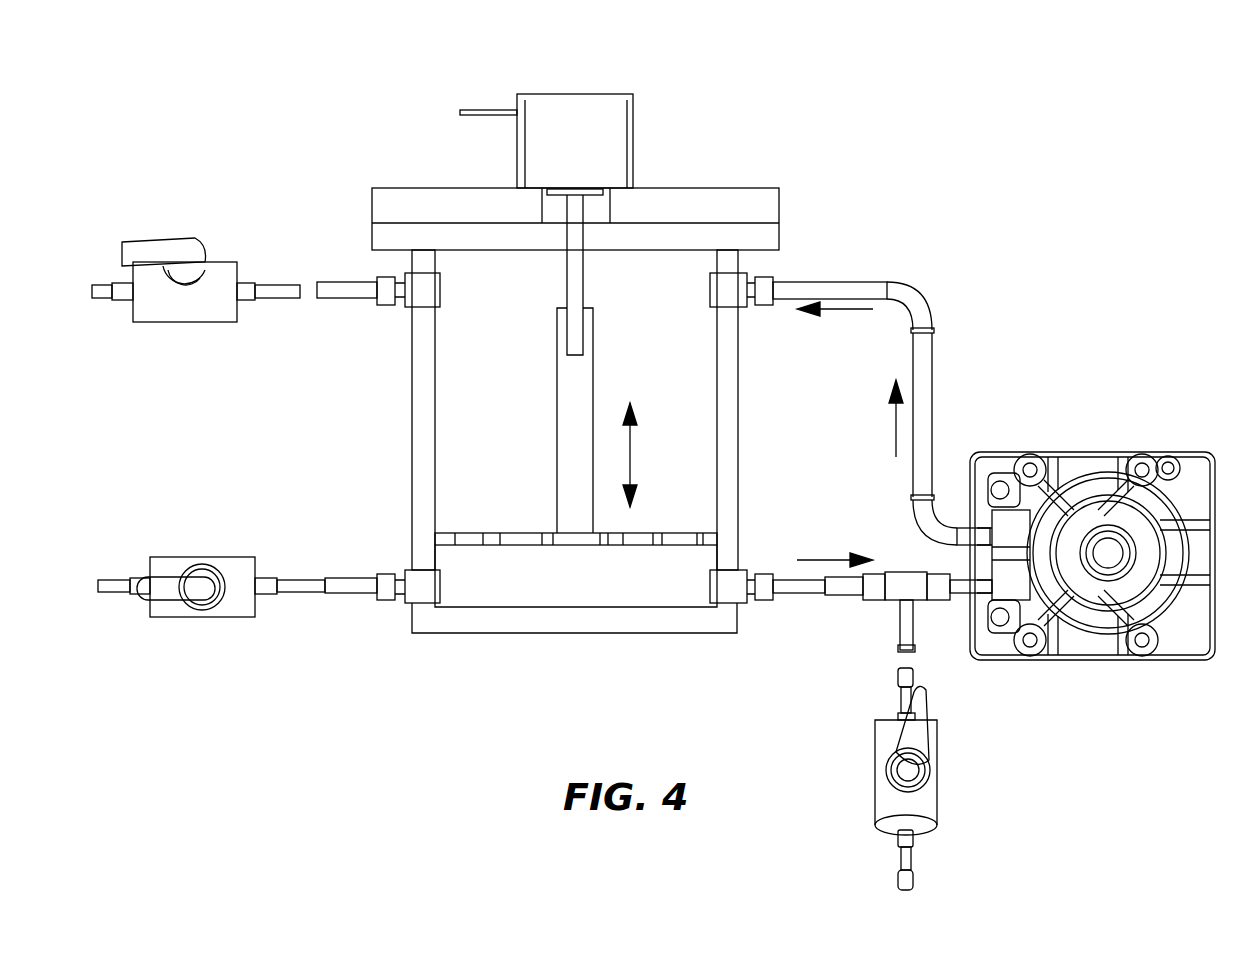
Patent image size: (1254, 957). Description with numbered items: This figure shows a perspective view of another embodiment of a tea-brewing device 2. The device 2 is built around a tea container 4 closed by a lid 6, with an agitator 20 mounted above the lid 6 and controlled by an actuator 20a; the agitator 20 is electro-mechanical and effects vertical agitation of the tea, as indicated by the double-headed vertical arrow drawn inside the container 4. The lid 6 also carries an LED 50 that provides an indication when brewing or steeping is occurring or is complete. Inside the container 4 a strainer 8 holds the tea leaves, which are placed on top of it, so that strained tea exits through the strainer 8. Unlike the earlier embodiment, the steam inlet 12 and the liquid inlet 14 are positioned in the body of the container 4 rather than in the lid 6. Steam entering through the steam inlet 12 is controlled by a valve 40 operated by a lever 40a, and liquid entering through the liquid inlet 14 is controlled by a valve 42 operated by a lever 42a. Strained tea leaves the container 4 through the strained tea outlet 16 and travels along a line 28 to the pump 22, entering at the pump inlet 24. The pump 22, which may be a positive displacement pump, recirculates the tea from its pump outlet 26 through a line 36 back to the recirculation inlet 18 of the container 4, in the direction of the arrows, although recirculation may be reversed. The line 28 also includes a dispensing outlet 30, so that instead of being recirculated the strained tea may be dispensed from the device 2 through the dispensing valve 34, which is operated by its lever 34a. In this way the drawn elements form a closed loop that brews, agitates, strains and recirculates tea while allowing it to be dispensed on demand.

The device 2 is at (1043, 185).
The tea container 4 is at (412, 440).
The lid 6 is at (740, 200).
The strainer 8 is at (637, 548).
The steam inlet 12 is at (340, 300).
The liquid inlet 14 is at (348, 596).
The strained tea outlet 16 is at (793, 597).
The recirculation inlet 18 is at (788, 282).
The agitator 20 is at (595, 100).
The actuator 20a is at (478, 108).
The pump 22 is at (1165, 660).
The pump inlet 24 is at (962, 600).
The pump outlet 26 is at (965, 528).
The line 28 is at (847, 597).
The dispensing outlet 30 is at (897, 636).
The dispensing valve 34 is at (875, 805).
The lever 34a is at (921, 740).
The line 36 is at (932, 362).
The valve 40 is at (155, 325).
The lever 40a is at (163, 247).
The valve 42 is at (227, 620).
The lever 42a is at (170, 583).
The LED 50 is at (600, 207).